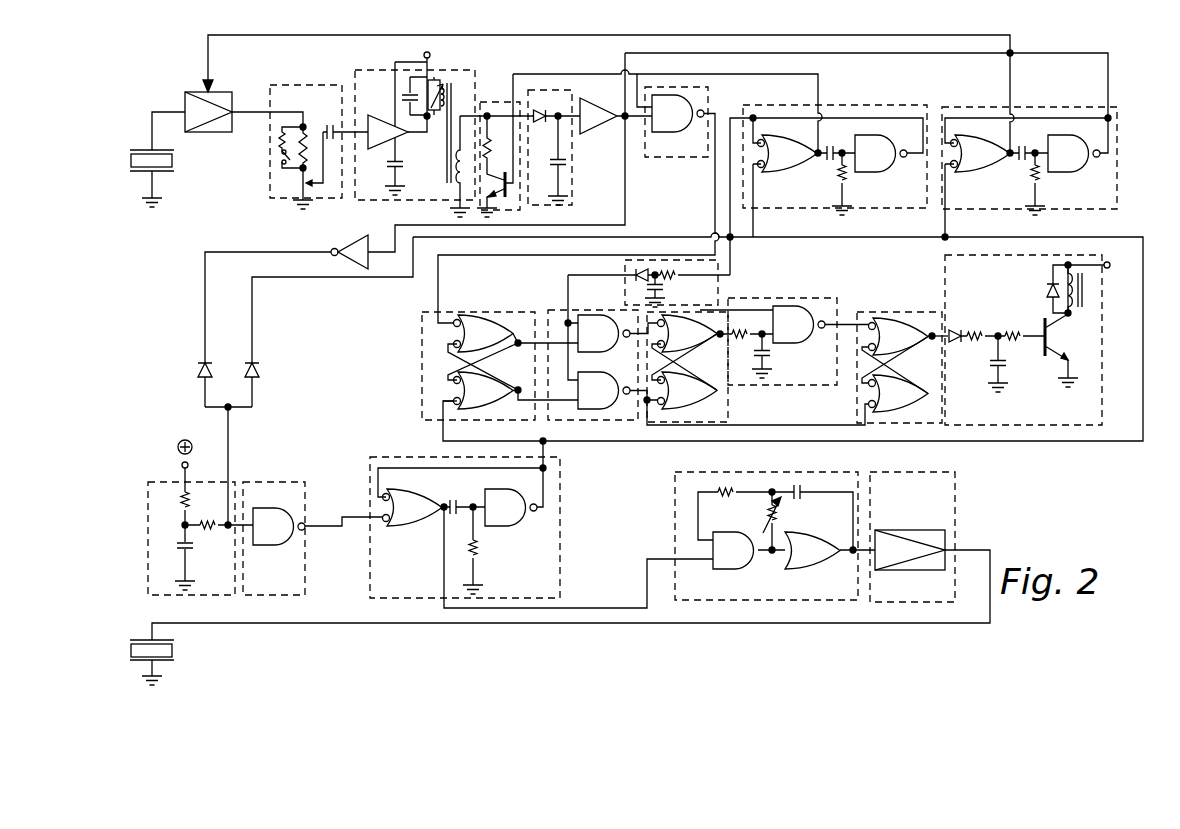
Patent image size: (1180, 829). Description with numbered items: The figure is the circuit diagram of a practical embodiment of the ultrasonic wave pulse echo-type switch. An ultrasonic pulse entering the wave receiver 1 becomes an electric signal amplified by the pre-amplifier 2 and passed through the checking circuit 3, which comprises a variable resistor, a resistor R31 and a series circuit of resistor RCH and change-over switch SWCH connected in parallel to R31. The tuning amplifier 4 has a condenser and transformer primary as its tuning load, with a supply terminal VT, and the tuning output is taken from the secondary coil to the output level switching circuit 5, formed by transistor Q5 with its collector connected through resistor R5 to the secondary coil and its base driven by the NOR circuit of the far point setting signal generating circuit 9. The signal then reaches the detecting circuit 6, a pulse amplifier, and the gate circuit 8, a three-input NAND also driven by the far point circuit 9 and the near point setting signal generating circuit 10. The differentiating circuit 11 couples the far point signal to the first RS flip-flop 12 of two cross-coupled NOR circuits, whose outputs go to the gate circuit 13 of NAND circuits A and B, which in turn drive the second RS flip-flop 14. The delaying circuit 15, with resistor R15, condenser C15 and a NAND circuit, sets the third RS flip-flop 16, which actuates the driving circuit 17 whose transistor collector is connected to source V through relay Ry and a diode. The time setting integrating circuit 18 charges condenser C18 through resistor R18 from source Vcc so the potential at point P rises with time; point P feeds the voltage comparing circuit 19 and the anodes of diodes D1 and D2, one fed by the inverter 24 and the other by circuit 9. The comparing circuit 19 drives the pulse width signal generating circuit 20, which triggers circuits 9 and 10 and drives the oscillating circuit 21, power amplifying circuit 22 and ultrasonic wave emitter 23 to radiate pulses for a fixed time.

The wave receiver 1 is at (131, 151).
The pre-amplifier 2 is at (206, 90).
The checking circuit 3 is at (282, 127).
The tuning amplifier 4 is at (412, 129).
The output level switching circuit 5 is at (472, 134).
The detecting circuit 6 is at (549, 88).
The gate circuit 8 is at (672, 159).
The far point setting signal generating circuit 9 is at (861, 104).
The near point setting signal generating circuit 10 is at (1035, 105).
The differentiating circuit 11 is at (728, 290).
The first RS flip-flop 12 is at (475, 310).
The gate circuit 13 is at (578, 308).
The second RS flip-flop 14 is at (730, 402).
The delaying circuit 15 is at (784, 323).
The third RS flip-flop 16 is at (903, 310).
The driving circuit 17 is at (1044, 339).
The time setting integrating circuit 18 is at (192, 498).
The voltage comparing circuit 19 is at (278, 480).
The pulse width signal generating circuit 20 is at (563, 536).
The oscillating circuit 21 is at (675, 493).
The power amplifying circuit 22 is at (960, 491).
The ultrasonic wave emitter 23 is at (175, 647).
The inverter 24 is at (350, 234).
The resistor R31 is at (305, 127).
The resistor RCH is at (280, 138).
The change-over switch SWCH is at (282, 160).
The supply voltage terminal VT is at (445, 56).
The resistor R5 is at (489, 138).
The transistor Q5 is at (490, 187).
The diode D1 is at (197, 370).
The diode D2 is at (262, 373).
The resistor R18 is at (215, 557).
The condenser C18 is at (176, 545).
The electric source Vcc is at (210, 449).
The output terminal point P is at (217, 504).
The resistor R15 is at (740, 330).
The condenser C15 is at (770, 352).
The relay Ry is at (1085, 290).
The electric source V is at (1128, 265).